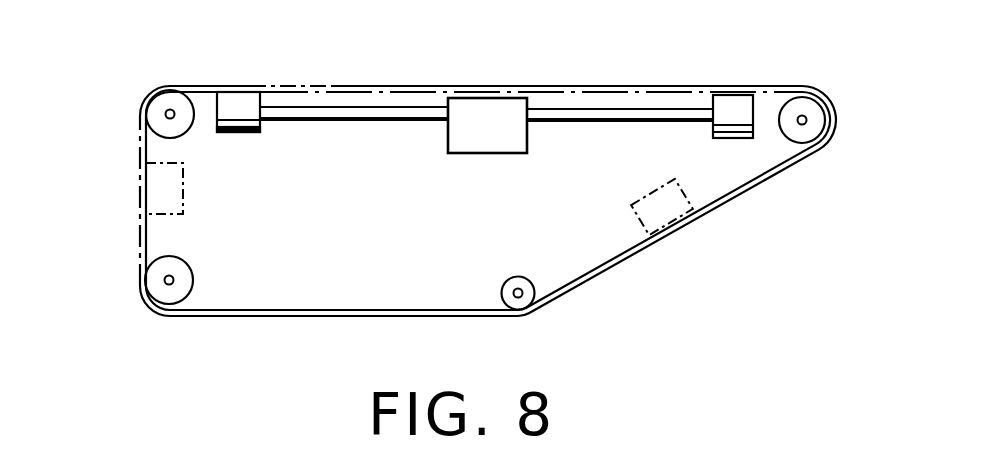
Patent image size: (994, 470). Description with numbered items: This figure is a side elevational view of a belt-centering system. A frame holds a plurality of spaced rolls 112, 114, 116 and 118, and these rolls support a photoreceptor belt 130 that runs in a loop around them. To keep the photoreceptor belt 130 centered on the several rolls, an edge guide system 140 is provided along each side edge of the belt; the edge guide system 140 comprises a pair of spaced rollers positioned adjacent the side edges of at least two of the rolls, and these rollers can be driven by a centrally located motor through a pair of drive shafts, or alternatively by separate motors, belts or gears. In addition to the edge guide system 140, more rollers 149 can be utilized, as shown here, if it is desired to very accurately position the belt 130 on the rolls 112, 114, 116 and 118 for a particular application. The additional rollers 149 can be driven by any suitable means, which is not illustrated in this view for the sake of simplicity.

The roll 112 is at (805, 116).
The roll 114 is at (166, 103).
The roll 116 is at (161, 284).
The roll 118 is at (522, 298).
The photoreceptor belt 130 is at (270, 84).
The edge guide system 140 is at (393, 162).
The additional rollers 149 is at (163, 188).